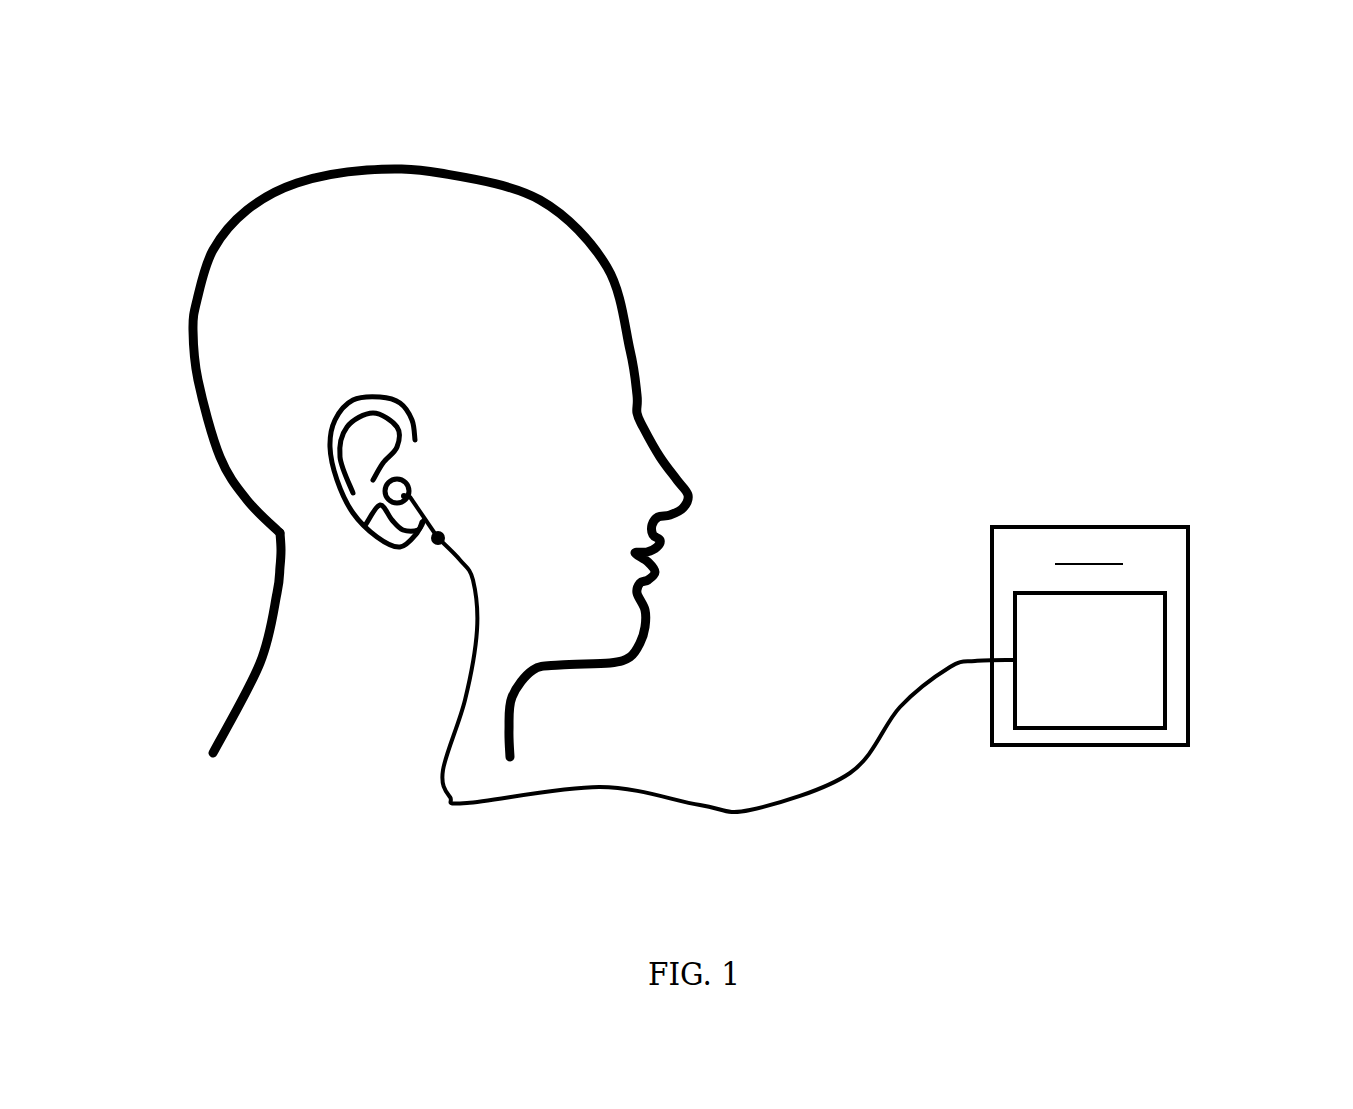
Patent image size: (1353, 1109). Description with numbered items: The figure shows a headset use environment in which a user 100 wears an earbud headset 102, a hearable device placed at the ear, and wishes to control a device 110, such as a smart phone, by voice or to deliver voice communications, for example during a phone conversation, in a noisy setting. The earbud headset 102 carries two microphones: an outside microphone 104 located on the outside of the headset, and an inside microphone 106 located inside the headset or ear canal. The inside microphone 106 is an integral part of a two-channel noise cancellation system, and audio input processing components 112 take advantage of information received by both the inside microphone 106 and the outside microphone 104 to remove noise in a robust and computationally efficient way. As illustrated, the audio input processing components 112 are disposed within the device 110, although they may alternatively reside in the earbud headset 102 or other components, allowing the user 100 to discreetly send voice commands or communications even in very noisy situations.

The user 100 is at (178, 136).
The earbud headset 102 is at (458, 575).
The outside microphone 104 is at (458, 532).
The inside microphone 106 is at (410, 470).
The device 110 is at (1090, 527).
The audio input processing components 112 is at (1165, 660).